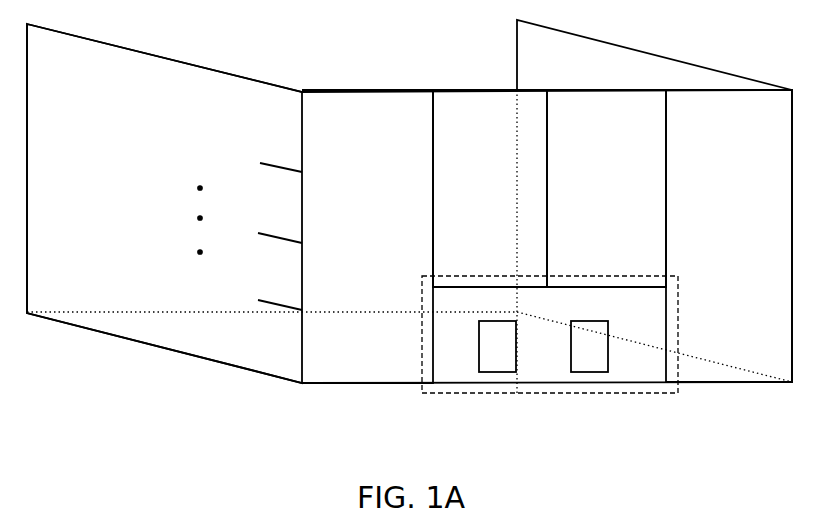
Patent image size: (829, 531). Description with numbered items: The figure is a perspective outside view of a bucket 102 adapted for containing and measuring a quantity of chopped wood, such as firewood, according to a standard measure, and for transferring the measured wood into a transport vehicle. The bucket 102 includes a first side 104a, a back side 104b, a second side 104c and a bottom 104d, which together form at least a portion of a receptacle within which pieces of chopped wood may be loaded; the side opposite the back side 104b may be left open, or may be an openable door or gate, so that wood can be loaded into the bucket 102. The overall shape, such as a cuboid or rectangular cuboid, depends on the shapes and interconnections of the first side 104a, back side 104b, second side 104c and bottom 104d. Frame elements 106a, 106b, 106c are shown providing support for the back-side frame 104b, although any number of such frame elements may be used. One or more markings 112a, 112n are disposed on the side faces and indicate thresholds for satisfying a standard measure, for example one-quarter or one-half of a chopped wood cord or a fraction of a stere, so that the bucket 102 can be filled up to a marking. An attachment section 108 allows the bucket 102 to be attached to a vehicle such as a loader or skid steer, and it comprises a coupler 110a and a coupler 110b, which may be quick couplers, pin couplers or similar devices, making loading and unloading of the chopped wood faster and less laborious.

The bucket 102 is at (86, 408).
The first side 104a is at (116, 134).
The back side 104b is at (771, 185).
The second side 104c is at (591, 78).
The bottom 104d is at (92, 310).
The frame element 106a is at (433, 175).
The frame element 106b is at (547, 243).
The frame element 106c is at (666, 168).
The attachment section 108 is at (678, 333).
The coupler 110a is at (479, 343).
The coupler 110b is at (608, 343).
The marking 112a is at (302, 310).
The marking 112n is at (302, 172).